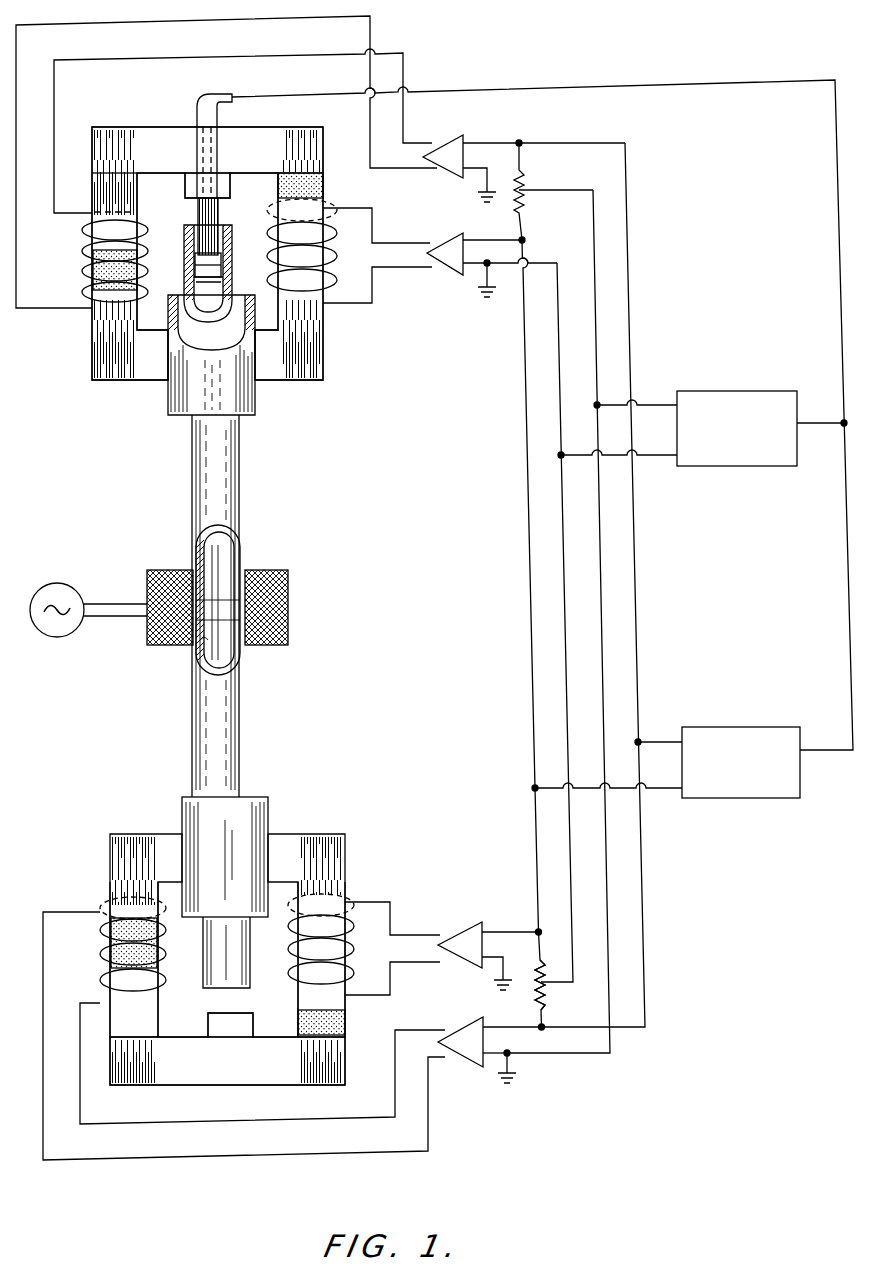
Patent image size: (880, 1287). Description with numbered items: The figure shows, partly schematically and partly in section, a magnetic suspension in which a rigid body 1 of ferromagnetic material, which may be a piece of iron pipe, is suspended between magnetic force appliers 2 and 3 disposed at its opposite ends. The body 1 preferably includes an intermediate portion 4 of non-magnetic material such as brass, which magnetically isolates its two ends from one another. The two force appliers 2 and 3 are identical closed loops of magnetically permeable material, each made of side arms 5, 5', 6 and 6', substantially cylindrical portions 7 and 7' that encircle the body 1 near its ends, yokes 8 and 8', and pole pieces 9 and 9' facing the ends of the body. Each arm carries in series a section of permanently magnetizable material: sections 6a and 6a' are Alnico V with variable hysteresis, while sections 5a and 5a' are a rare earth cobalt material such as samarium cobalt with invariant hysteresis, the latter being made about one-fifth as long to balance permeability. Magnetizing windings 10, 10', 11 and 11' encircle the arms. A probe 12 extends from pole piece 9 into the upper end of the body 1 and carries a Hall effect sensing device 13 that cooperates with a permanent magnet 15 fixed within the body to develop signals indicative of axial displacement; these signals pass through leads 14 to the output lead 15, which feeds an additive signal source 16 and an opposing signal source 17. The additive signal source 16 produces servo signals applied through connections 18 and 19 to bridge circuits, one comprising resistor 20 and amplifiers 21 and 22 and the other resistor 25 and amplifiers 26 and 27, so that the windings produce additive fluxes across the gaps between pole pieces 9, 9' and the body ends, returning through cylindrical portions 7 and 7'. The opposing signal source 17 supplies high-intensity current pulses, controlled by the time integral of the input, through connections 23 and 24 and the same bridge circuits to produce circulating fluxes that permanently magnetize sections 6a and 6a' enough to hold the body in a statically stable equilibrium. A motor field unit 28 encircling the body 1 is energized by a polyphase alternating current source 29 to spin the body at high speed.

The rigid body 1 is at (226, 459).
The magnetic force applier 2 is at (329, 153).
The magnetic force applier 3 is at (350, 870).
The intermediate portion 4 is at (200, 650).
The arm 5 is at (309, 276).
The permanently magnetizable section 5a is at (323, 190).
The arm 5' is at (341, 937).
The permanently magnetizable section 5a' is at (343, 1026).
The arm 6 is at (110, 276).
The permanently magnetizable section 6a is at (86, 272).
The arm 6' is at (150, 939).
The permanently magnetizable section 6a' is at (102, 955).
The cylindrical portion 7 is at (235, 360).
The cylindrical portion 7' is at (255, 888).
The top yoke 8 is at (207, 150).
The bottom yoke 8' is at (227, 1077).
The pole piece 9 is at (188, 193).
The pole piece 9' is at (244, 1023).
The magnetizing winding 10 is at (316, 245).
The magnetizing winding 10' is at (339, 939).
The magnetizing winding 11 is at (93, 257).
The magnetizing winding 11' is at (109, 944).
The probe 12 is at (219, 214).
The sensing device 13 is at (194, 272).
The leads 14 is at (215, 148).
The output lead 15 is at (236, 282).
The additive signal source 16 is at (745, 391).
The opposing signal source 17 is at (745, 727).
The connection 18 is at (600, 603).
The connection 19 is at (565, 607).
The resistor 20 is at (527, 183).
The amplifier 21 is at (448, 136).
The amplifier 22 is at (455, 238).
The connection 23 is at (528, 572).
The connection 24 is at (637, 574).
The resistor 25 is at (546, 996).
The amplifier 26 is at (468, 928).
The amplifier 27 is at (468, 1026).
The motor field unit 28 is at (270, 570).
The polyphase source 29 is at (66, 583).